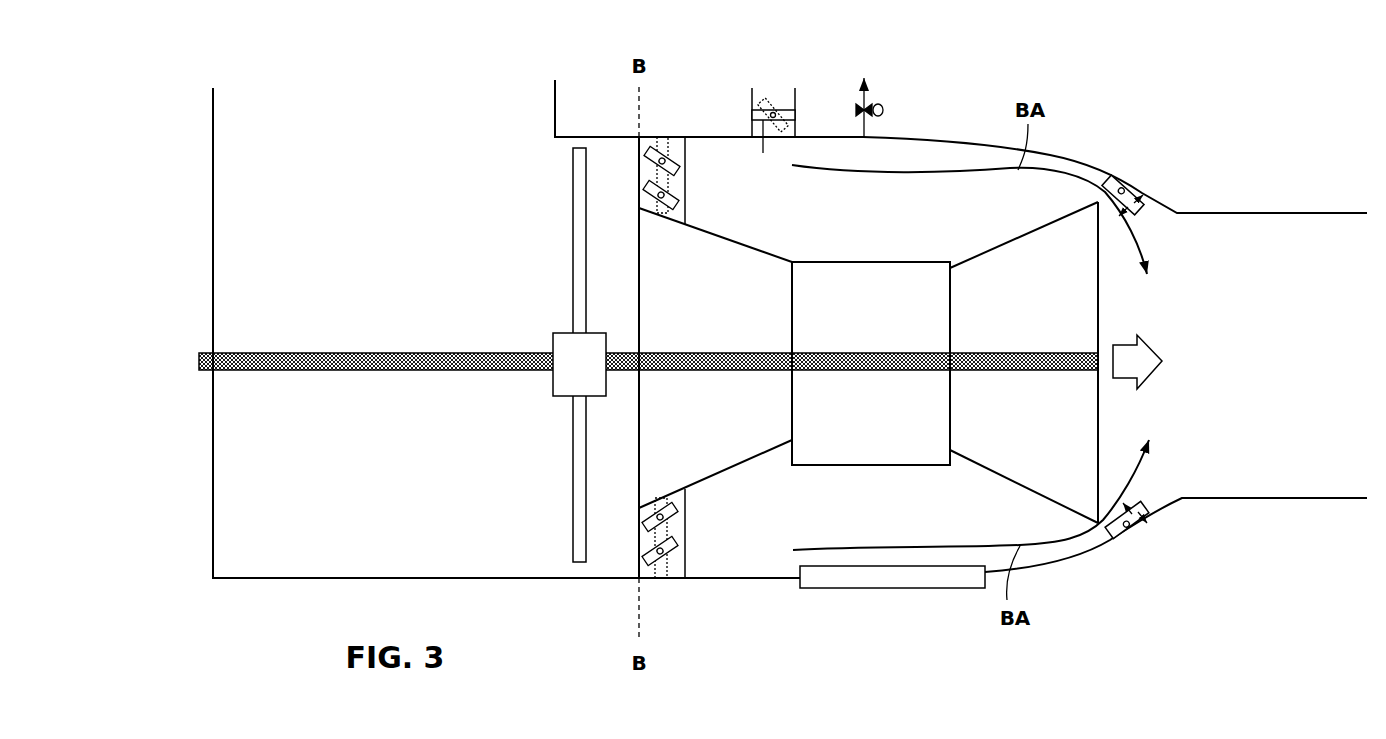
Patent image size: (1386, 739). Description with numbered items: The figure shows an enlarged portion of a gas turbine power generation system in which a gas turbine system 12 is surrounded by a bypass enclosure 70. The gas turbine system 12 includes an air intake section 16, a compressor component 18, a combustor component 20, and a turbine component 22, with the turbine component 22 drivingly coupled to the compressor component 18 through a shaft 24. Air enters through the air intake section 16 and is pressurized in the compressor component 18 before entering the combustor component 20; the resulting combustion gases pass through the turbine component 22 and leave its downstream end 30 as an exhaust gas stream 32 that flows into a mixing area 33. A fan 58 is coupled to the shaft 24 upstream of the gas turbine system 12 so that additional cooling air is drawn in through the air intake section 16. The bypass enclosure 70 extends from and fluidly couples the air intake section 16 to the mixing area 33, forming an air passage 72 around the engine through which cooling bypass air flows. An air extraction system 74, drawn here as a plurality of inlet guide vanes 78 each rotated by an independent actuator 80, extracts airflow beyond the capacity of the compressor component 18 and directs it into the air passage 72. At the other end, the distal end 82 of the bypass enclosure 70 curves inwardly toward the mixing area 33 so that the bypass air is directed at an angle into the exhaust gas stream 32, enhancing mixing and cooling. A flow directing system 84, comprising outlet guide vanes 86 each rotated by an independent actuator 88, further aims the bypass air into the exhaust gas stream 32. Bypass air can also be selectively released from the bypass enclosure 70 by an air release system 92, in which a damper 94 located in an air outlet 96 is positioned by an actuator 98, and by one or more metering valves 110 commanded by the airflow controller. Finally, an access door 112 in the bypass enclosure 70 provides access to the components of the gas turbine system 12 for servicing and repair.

The gas turbine system 12 is at (771, 489).
The air intake section 16 is at (242, 118).
The compressor component 18 is at (710, 319).
The combustor component 20 is at (860, 319).
The turbine component 22 is at (1011, 319).
The shaft 24 is at (392, 353).
The downstream end 30 is at (1098, 433).
The exhaust gas stream 32 is at (1121, 372).
The mixing area 33 is at (1213, 371).
The fan 58 is at (573, 470).
The bypass enclosure 70 is at (981, 142).
The air passage 72 is at (836, 229).
The air extraction system 74 is at (662, 344).
The inlet guide vanes 78 is at (679, 165).
The actuator 80 is at (672, 194).
The distal end 82 is at (1092, 145).
The flow directing system 84 is at (1152, 216).
The outlet guide vanes 86 is at (1129, 185).
The actuator 88 is at (1136, 187).
The air release system 92 is at (783, 113).
The damper 94 is at (758, 152).
The air outlet 96 is at (759, 82).
The actuator 98 is at (773, 110).
The metering valve 110 is at (868, 108).
The access door 112 is at (900, 590).